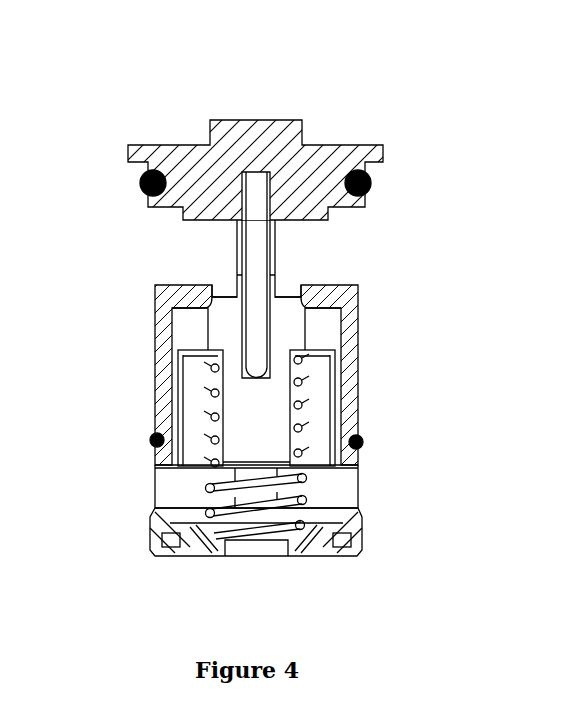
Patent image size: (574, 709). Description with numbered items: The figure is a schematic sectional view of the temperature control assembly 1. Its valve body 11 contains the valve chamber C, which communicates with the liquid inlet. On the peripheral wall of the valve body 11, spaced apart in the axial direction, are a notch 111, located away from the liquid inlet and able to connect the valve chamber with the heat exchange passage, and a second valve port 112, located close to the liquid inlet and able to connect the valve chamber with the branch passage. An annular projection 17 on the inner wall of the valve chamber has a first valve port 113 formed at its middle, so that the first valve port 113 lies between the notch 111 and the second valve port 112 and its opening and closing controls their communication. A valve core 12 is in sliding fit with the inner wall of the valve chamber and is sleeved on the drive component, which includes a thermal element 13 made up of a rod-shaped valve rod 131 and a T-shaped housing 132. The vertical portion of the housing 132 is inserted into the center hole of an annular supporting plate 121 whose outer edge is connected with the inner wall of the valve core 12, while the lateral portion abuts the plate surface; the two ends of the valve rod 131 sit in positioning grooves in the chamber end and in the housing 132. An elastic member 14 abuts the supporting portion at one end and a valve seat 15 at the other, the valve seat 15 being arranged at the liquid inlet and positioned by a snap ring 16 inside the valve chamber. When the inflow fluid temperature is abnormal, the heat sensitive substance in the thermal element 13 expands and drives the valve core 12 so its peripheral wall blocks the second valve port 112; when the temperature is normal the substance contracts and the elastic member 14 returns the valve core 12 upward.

The temperature control assembly 1 is at (108, 88).
The valve body 11 is at (252, 130).
The notch 111 is at (357, 245).
The second valve port 112 is at (362, 488).
The first valve port 113 is at (223, 282).
The valve core 12 is at (177, 381).
The supporting plate 121 is at (193, 338).
The thermal element 13 is at (208, 250).
The valve rod 131 is at (257, 260).
The housing 132 is at (292, 317).
The elastic member 14 is at (305, 405).
The valve seat 15 is at (184, 520).
The snap ring 16 is at (172, 545).
The annular projection 17 is at (323, 276).